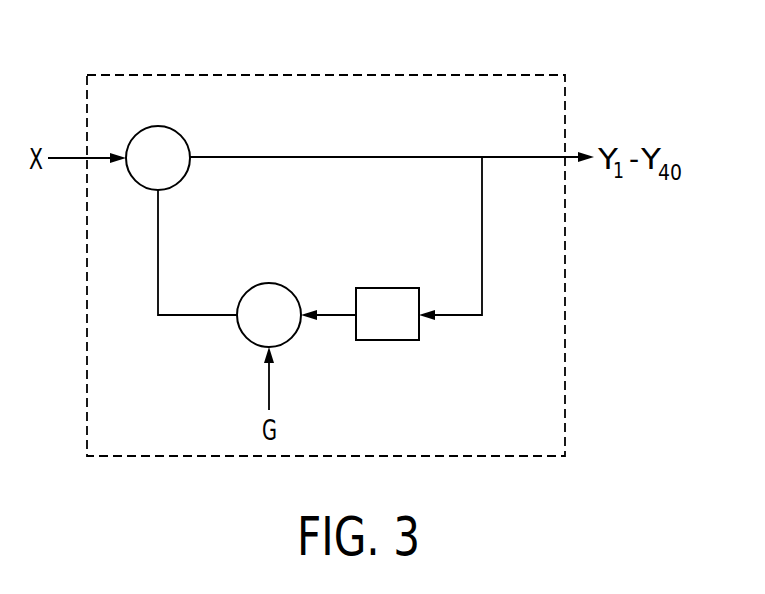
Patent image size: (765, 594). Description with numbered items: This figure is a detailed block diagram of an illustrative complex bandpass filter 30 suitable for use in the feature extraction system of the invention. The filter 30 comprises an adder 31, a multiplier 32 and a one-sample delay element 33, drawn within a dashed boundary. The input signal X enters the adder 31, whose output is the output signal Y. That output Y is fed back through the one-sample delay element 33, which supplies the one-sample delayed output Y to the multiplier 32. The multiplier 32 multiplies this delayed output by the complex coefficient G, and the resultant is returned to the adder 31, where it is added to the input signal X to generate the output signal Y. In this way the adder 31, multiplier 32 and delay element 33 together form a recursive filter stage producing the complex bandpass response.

The complex bandpass filter 30 is at (248, 75).
The adder 31 is at (158, 126).
The multiplier 32 is at (269, 283).
The one-sample delay element 33 is at (397, 288).